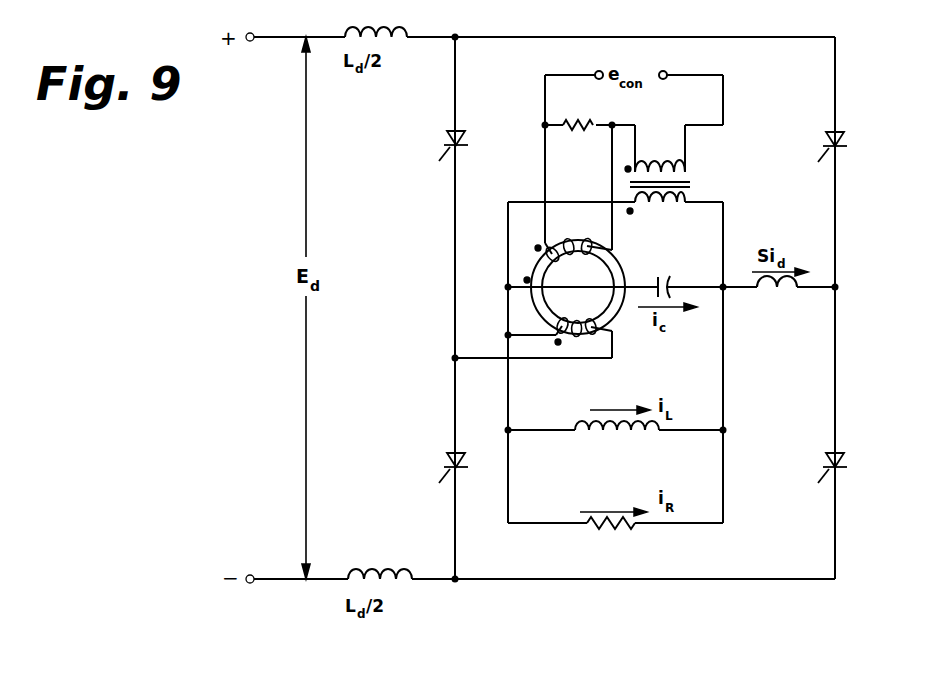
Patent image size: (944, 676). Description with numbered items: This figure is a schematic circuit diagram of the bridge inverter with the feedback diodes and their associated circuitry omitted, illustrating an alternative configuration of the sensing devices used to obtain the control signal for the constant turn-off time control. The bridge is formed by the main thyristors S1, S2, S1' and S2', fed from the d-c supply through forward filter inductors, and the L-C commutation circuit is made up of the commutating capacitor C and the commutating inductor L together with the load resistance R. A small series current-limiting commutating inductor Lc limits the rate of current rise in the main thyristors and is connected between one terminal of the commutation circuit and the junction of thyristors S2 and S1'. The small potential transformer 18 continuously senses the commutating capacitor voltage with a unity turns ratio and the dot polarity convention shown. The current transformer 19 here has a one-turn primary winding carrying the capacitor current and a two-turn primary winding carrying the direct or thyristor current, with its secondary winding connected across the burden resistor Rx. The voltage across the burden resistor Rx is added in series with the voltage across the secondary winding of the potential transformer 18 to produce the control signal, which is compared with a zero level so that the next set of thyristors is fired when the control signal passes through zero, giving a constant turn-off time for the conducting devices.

The potential transformer 18 is at (668, 163).
The current transformer 19 is at (580, 240).
The main thyristor S1 is at (440, 146).
The main thyristor S2 is at (818, 146).
The main thyristor S1' is at (818, 468).
The main thyristor S2' is at (438, 468).
The commutating capacitor C is at (670, 282).
The commutating inductor L is at (617, 441).
The load resistance R is at (611, 535).
The series current-limiting commutating inductor Lc is at (777, 302).
The burden resistor Rx is at (578, 114).